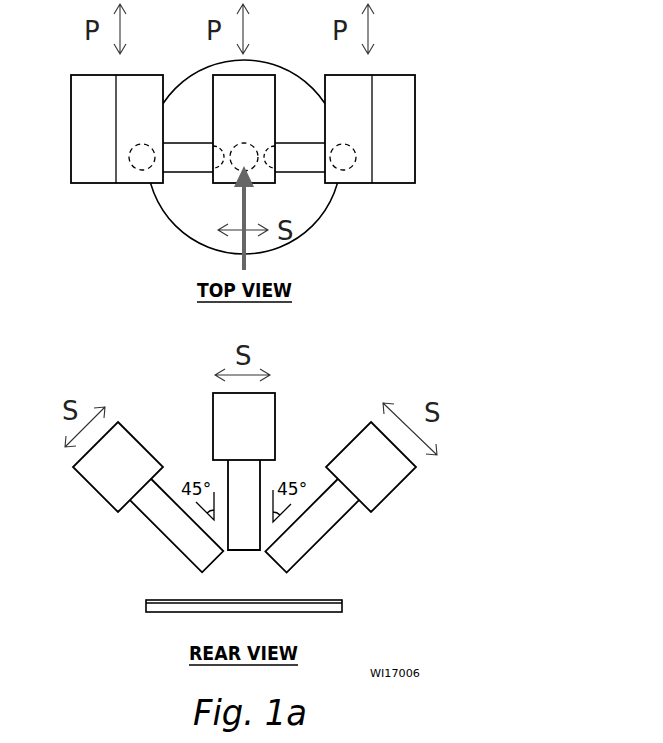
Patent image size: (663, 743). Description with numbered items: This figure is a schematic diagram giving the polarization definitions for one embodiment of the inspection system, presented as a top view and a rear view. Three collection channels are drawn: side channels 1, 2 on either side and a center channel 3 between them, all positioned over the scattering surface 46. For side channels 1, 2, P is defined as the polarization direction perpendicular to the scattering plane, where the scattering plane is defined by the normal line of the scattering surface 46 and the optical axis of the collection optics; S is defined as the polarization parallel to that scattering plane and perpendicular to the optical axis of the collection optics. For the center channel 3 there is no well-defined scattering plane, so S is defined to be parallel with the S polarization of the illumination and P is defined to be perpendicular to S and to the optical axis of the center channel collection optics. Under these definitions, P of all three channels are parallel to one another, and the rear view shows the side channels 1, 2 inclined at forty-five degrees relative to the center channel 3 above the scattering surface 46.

The side channel 1 is at (147, 323).
The side channel 2 is at (340, 324).
The center channel 3 is at (244, 312).
The scattering surface 46 is at (318, 217).